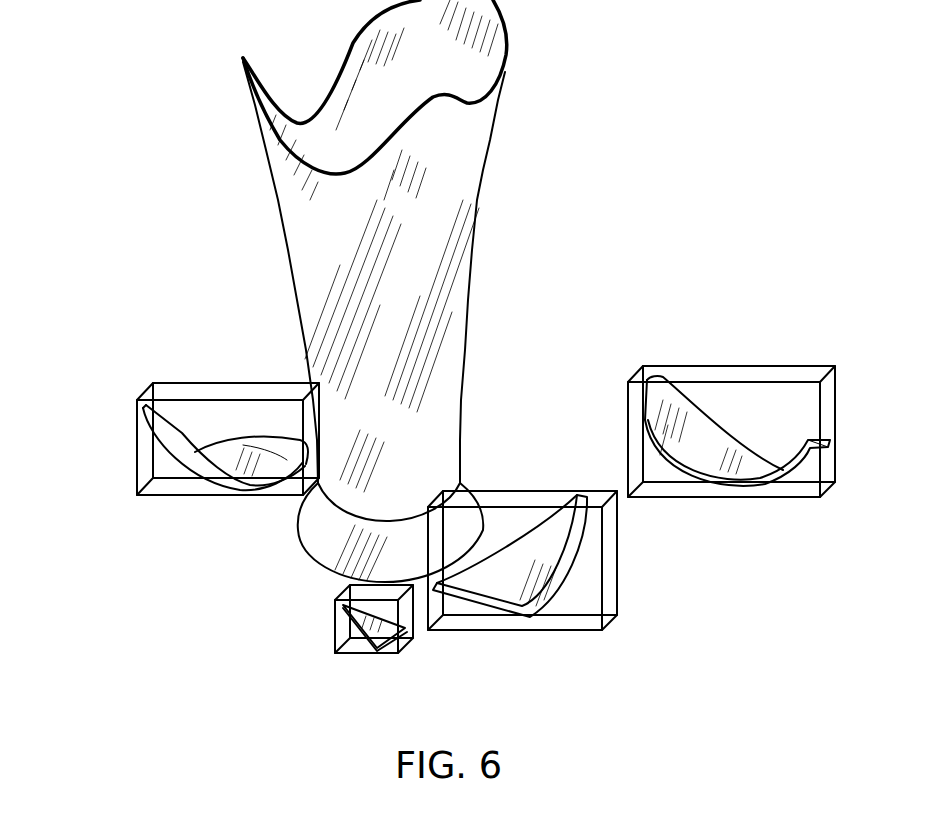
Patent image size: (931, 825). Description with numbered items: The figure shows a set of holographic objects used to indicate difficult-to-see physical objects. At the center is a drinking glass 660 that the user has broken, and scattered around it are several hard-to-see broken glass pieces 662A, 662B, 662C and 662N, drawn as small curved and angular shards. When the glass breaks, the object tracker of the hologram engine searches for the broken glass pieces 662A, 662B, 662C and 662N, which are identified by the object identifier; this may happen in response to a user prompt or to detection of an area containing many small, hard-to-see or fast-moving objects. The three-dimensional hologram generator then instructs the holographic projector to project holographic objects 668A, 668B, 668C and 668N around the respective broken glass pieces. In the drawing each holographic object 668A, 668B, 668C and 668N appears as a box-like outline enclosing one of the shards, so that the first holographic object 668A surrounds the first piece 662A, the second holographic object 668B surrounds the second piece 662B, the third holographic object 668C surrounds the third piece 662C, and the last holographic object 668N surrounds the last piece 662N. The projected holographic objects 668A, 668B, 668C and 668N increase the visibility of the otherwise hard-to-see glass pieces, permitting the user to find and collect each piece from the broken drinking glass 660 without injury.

The drinking glass 660 is at (236, 214).
The holographic object 668A is at (137, 421).
The broken glass piece 662A is at (223, 488).
The holographic object 668B is at (335, 613).
The broken glass piece 662B is at (378, 654).
The holographic object 668C is at (510, 490).
The broken glass piece 662C is at (528, 632).
The holographic object 668N is at (715, 366).
The broken glass piece 662N is at (730, 497).